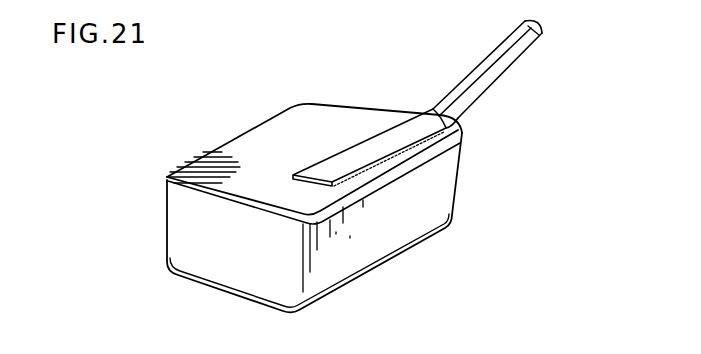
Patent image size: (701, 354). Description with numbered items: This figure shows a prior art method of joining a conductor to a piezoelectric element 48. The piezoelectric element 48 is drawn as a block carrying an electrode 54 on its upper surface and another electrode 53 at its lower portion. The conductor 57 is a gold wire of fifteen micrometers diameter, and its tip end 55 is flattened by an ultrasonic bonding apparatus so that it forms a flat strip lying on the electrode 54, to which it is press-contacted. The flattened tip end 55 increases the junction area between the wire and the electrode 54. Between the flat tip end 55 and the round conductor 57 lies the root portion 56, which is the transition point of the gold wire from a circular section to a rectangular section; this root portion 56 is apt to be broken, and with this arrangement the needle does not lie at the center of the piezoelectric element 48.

The piezoelectric element 48 is at (455, 178).
The electrode 53 is at (433, 232).
The electrode 54 is at (330, 107).
The tip end 55 is at (372, 140).
The root portion 56 is at (445, 104).
The conductor 57 is at (517, 53).